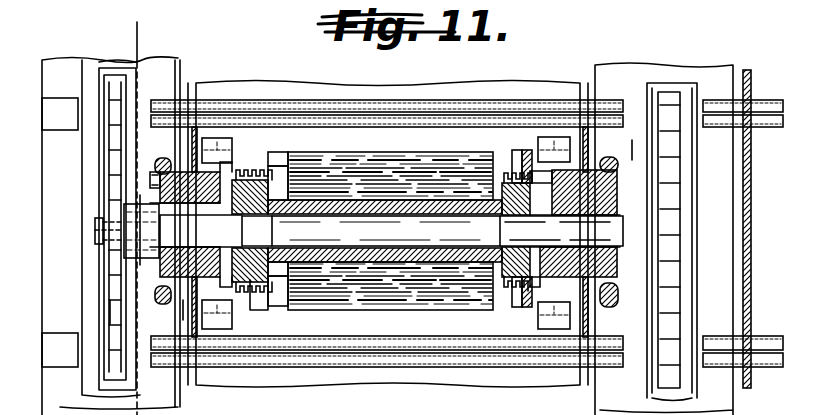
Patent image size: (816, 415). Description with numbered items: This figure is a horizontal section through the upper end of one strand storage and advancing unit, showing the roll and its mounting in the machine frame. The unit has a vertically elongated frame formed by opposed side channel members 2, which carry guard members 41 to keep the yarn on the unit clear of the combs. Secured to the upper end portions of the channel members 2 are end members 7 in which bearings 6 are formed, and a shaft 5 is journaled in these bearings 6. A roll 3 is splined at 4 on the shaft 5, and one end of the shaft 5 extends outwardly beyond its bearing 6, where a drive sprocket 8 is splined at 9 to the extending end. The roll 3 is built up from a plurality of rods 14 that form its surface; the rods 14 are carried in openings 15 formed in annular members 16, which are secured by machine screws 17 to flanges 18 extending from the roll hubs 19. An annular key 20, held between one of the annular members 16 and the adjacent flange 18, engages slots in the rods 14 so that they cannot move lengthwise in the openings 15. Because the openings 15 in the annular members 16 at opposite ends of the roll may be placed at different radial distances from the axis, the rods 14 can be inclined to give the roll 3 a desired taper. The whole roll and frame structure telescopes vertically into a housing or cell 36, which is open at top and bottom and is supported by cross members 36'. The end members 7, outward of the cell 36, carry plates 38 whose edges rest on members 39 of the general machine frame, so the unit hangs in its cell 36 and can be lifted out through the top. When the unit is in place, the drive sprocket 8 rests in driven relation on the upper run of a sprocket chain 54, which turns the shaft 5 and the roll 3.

The rods 14 is at (160, 42).
The guard members 41 is at (215, 138).
The side channel members 2 is at (225, 146).
The housing or cell 36 is at (467, 221).
The cross members 36' is at (387, 233).
The roll 3 is at (342, 144).
The plates 38 is at (632, 140).
The end members 7 is at (180, 172).
The openings 15 is at (250, 160).
The roll hubs 19 is at (362, 210).
The flanges 18 is at (486, 202).
The annular members 16 is at (522, 150).
The drive sprocket 8 is at (115, 186).
The spline 9 is at (94, 222).
The bearings 6 is at (186, 246).
The spline 4 is at (268, 231).
The shaft 5 is at (386, 231).
The members 39 is at (618, 164).
The sprocket chain 54 is at (110, 311).
The machine screws 17 is at (260, 305).
The annular key 20 is at (283, 300).